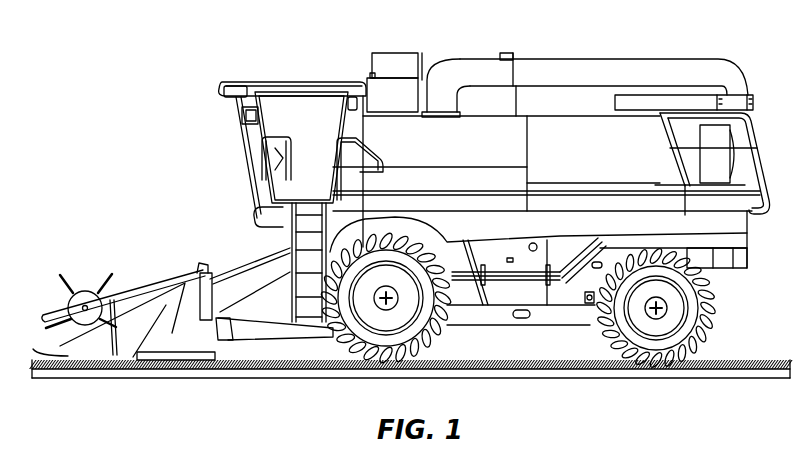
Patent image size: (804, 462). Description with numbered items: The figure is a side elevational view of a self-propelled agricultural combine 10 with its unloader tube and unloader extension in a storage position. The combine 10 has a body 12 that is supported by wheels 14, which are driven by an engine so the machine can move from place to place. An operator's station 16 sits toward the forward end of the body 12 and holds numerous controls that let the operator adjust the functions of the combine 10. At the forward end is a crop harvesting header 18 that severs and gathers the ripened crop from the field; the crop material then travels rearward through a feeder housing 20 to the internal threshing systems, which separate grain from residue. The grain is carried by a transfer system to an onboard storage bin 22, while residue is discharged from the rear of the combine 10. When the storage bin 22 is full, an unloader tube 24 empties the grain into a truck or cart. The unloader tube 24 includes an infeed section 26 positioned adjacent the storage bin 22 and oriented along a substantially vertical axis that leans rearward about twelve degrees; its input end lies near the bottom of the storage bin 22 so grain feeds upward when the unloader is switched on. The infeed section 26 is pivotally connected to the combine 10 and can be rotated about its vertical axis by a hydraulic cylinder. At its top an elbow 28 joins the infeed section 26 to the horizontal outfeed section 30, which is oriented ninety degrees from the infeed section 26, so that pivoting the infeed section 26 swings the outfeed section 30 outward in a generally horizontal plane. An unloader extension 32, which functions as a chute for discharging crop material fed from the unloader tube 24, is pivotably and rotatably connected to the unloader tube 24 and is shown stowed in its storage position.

The self-propelled agricultural combine 10 is at (195, 45).
The body 12 is at (493, 177).
The wheels 14 is at (328, 352).
The operator's station 16 is at (245, 167).
The crop harvesting header 18 is at (84, 286).
The feeder housing 20 is at (250, 265).
The onboard storage bin 22 is at (500, 55).
The unloader tube 24 is at (560, 65).
The infeed section 26 is at (422, 100).
The elbow 28 is at (440, 75).
The horizontal outfeed section 30 is at (681, 48).
The unloader extension 32 is at (645, 96).